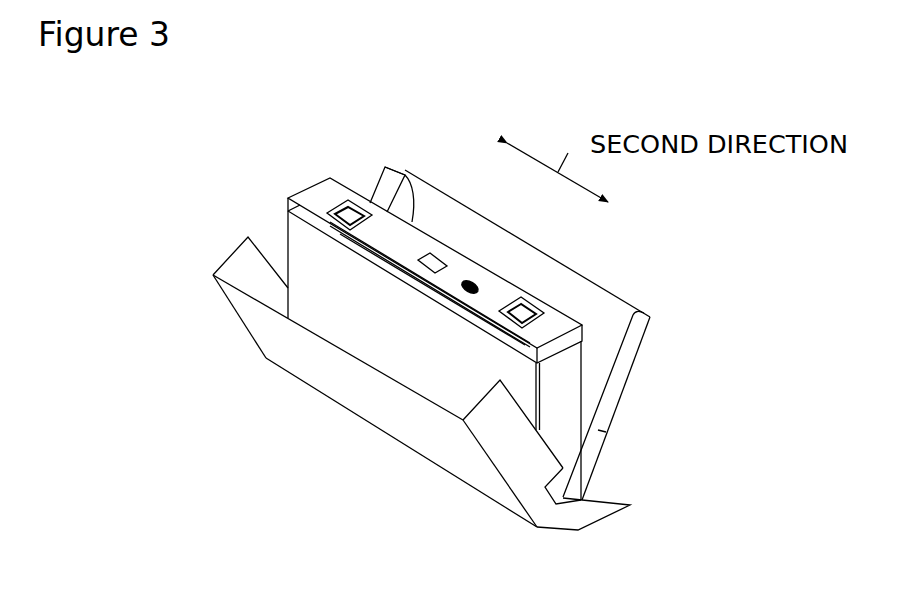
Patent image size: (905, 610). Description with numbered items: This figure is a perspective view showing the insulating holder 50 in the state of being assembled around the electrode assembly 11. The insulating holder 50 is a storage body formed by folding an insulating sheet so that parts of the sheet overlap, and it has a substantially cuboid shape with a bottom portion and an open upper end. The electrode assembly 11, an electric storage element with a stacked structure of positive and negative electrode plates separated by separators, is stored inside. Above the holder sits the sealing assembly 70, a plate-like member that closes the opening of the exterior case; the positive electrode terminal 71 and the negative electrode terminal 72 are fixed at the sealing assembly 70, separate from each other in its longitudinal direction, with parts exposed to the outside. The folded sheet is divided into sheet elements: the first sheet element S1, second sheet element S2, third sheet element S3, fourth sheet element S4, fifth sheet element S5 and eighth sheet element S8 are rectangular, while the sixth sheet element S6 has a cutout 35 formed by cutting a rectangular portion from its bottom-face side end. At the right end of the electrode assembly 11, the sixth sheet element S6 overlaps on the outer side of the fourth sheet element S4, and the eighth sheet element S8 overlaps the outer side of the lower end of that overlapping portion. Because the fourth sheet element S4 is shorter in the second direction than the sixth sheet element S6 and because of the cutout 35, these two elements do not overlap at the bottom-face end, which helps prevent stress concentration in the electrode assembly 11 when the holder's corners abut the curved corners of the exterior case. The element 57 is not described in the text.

The insulating holder 50 is at (592, 275).
The electrode assembly 11 is at (573, 395).
The cutout 35 is at (523, 527).
The flange plate 57 is at (240, 265).
The sealing assembly 70 is at (412, 200).
The positive electrode terminal 71 is at (531, 297).
The negative electrode terminal 72 is at (351, 201).
The first sheet element S1 is at (633, 358).
The second sheet element S2 is at (477, 228).
The third sheet element S3 is at (343, 405).
The fourth sheet element S4 is at (600, 432).
The fifth sheet element S5 is at (392, 163).
The sixth sheet element S6 is at (510, 455).
The eighth sheet element S8 is at (578, 528).